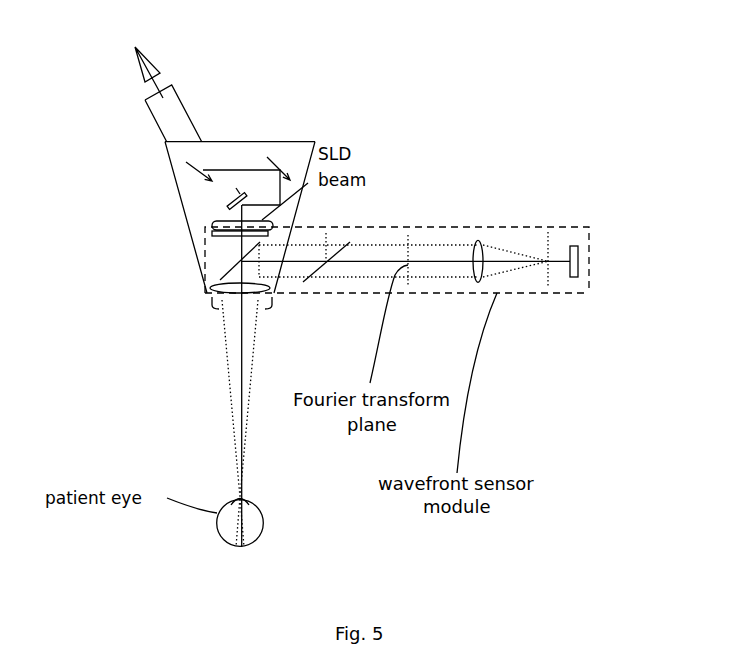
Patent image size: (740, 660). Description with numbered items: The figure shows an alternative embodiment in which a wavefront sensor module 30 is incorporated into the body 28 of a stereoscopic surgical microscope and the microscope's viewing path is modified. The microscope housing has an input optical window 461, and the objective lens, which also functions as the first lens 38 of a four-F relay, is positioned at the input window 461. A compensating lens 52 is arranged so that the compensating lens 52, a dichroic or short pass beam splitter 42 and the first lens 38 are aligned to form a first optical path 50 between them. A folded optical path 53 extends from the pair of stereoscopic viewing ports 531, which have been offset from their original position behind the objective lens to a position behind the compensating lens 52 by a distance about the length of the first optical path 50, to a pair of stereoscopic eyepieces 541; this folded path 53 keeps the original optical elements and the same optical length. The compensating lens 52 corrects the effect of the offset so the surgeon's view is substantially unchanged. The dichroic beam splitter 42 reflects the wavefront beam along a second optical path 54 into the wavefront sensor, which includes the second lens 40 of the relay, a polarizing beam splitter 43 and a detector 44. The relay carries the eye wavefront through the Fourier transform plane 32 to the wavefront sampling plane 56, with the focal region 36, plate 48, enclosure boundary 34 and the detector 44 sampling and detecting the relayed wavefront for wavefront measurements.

The optical module housing 28 is at (245, 141).
The wavefront sensor module 30 is at (593, 212).
The Fourier transform plane 32 is at (400, 227).
The wavefront sensor module enclosure 34 is at (433, 293).
The focal region 36 is at (530, 252).
The first lens 38 is at (207, 293).
The second lens 40 is at (479, 240).
The dichroic or short pass beam splitter 42 is at (213, 278).
The polarizing beam splitter 43 is at (322, 267).
The detector 44 is at (575, 277).
The wave plate 48 is at (212, 223).
The first optical path 50 is at (235, 246).
The compensating lens 52 is at (210, 232).
The folded optical path 53 is at (243, 170).
The second optical path 54 is at (443, 262).
The wavefront sampling plane 56 is at (548, 247).
The input optical window 461 is at (275, 310).
The stereoscopic viewing ports 531 is at (227, 201).
The stereoscopic eyepieces 541 is at (169, 84).